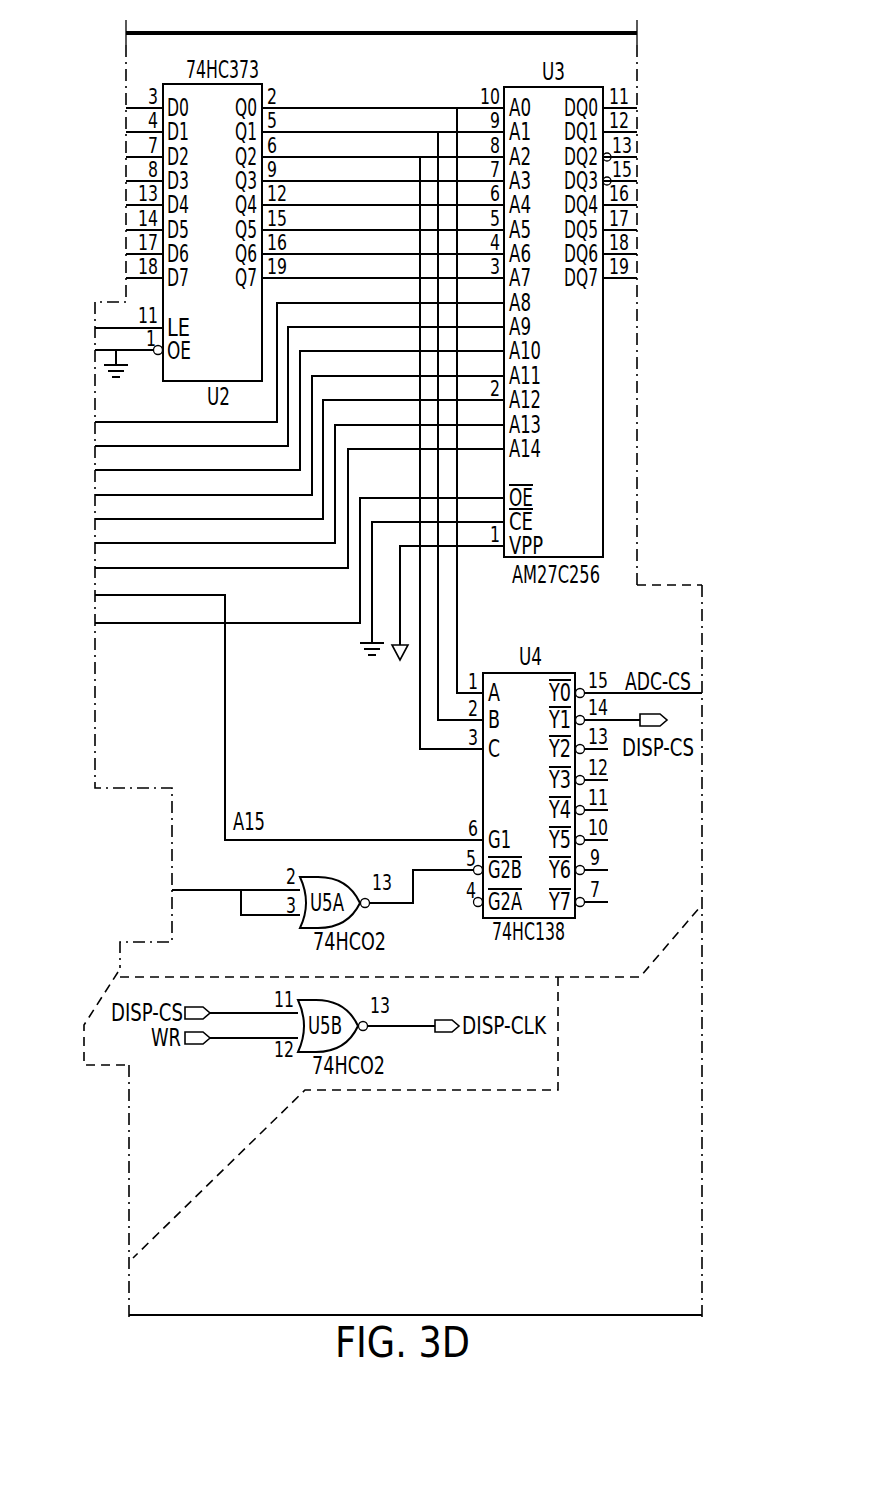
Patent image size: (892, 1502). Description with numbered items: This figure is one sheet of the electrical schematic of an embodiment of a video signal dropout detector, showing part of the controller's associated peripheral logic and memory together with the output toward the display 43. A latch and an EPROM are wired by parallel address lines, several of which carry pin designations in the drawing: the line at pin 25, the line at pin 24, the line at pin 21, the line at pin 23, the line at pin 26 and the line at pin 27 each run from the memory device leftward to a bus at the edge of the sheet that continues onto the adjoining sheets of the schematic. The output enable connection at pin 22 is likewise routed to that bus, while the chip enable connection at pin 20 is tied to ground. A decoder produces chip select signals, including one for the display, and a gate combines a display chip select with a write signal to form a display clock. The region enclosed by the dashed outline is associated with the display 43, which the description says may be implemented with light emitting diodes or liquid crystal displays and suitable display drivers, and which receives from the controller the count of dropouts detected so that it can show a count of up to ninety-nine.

The display 43 is at (235, 1158).
The address line A8 (pin 25) 25 is at (299, 351).
The buffer amp 24 is at (299, 375).
The address line A10 (pin 21) 21 is at (299, 399).
The address line A11 (pin 23) 23 is at (299, 424).
The address line A13 (pin 26) 26 is at (299, 472).
The address line A14 (pin 27) 27 is at (299, 497).
The output enable line (pin 22) 22 is at (299, 549).
The chip enable line to ground (pin 20) 20 is at (432, 577).